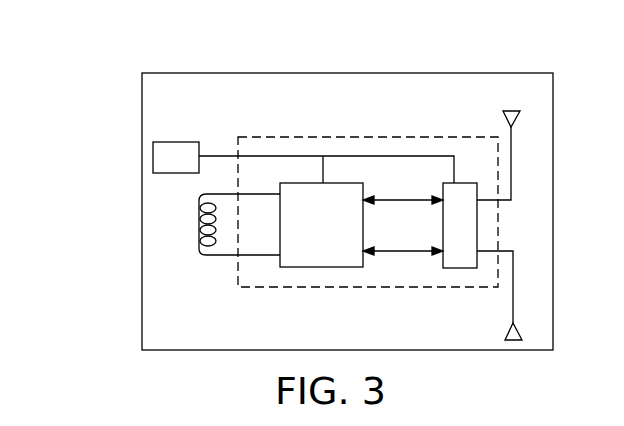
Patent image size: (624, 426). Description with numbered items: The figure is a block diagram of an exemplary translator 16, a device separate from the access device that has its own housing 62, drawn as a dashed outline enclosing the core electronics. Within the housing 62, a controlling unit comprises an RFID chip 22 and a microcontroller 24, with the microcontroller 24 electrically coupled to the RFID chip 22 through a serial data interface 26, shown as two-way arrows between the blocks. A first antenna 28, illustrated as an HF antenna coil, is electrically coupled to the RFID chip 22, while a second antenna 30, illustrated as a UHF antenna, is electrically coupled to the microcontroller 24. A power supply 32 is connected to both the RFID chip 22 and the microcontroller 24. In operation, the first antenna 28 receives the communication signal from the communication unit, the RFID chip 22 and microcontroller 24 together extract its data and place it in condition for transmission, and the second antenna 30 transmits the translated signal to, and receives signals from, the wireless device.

The translator 16 is at (107, 98).
The housing 62 is at (370, 137).
The power supply 32 is at (153, 157).
The RFID chip 22 is at (322, 268).
The microcontroller 24 is at (460, 268).
The serial data interface 26 is at (410, 198).
The first antenna 28 is at (209, 257).
The second antenna 30 is at (513, 293).